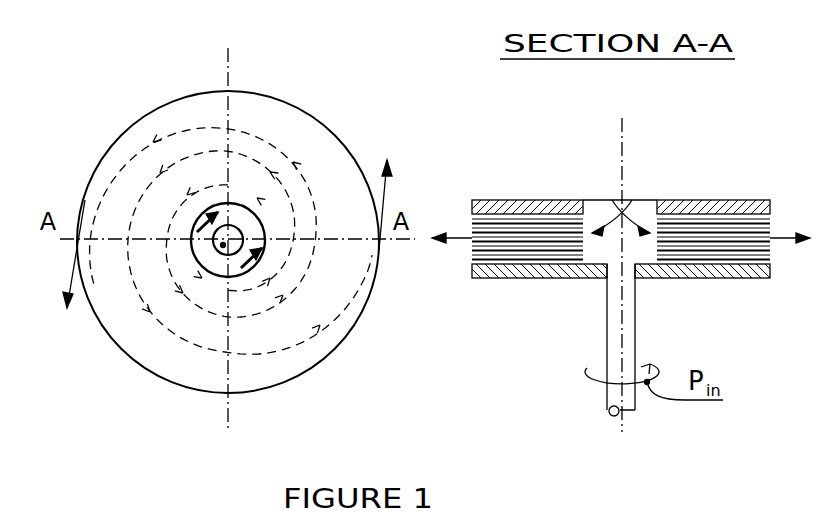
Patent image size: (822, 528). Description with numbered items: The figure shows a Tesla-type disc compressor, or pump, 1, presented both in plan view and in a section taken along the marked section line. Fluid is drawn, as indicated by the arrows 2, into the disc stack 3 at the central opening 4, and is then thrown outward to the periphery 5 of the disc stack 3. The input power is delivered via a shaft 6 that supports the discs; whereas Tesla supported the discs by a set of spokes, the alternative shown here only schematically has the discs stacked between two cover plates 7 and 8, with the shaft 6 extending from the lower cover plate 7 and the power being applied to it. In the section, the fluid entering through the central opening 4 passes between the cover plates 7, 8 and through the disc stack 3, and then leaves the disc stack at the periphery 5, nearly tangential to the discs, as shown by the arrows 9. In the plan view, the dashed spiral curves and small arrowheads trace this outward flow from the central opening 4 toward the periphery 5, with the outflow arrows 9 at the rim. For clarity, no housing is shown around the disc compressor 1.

The disc compressor 1 is at (123, 65).
The arrows 2 is at (207, 213).
The disc stack 3 is at (265, 112).
The central opening 4 is at (253, 210).
The periphery 5 is at (325, 357).
The shaft 6 is at (223, 246).
The cover plate 7 is at (553, 270).
The cover plate 8 is at (735, 205).
The arrows 9 is at (68, 275).